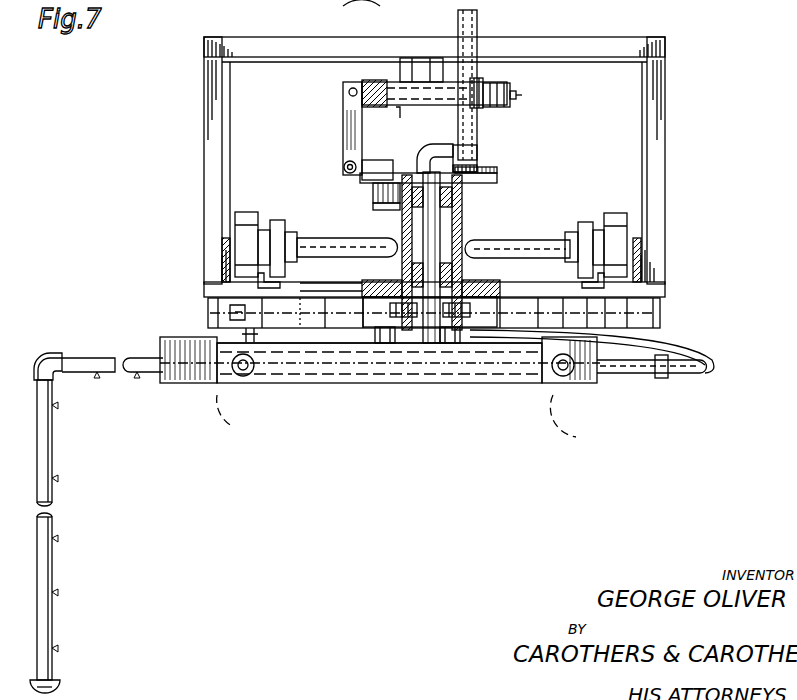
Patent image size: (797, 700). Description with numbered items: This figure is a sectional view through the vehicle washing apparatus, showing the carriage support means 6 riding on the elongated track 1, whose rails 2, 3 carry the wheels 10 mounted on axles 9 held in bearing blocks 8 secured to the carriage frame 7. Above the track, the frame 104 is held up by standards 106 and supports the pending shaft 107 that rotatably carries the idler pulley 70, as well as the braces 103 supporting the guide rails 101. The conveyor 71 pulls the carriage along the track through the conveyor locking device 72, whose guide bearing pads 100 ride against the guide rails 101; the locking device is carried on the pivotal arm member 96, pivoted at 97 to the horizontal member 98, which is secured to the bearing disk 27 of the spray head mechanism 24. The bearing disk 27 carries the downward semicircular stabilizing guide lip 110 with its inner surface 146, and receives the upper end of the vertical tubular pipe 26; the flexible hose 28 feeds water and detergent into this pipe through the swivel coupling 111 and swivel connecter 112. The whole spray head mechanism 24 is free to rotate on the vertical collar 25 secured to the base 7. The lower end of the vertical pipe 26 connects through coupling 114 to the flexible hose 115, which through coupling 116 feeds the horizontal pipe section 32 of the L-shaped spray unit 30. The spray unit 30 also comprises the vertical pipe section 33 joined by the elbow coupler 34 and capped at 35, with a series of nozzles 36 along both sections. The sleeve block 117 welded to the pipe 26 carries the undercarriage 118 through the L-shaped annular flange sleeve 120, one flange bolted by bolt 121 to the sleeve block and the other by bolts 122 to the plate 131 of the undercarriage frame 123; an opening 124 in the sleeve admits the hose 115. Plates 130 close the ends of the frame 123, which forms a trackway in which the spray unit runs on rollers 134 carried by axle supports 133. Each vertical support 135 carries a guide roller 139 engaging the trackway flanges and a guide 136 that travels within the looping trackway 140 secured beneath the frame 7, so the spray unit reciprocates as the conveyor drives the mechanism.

The elongated track 1 is at (231, 242).
The rail 2 is at (215, 283).
The rail 3 is at (641, 274).
The carriage support means 6 is at (362, 226).
The carriage support means frame 7 is at (344, 297).
The bearing blocks 8 is at (277, 224).
The axles 9 is at (305, 243).
The wheels 10 is at (245, 222).
The spray head mechanism 24 is at (533, 174).
The vertical collar 25 is at (462, 226).
The vertical tubular pipe 26 is at (425, 256).
The bearing disk 27 is at (497, 178).
The flexible hose 28 is at (460, 28).
The spray unit 30 is at (75, 358).
The horizontal pipe section 32 is at (140, 358).
The vertical pipe section 33 is at (52, 454).
The elbow coupler 34 is at (44, 356).
The cap 35 is at (56, 688).
The nozzles 36 is at (98, 410).
The idler pulley 70 is at (460, 110).
The conveyor 71 is at (522, 95).
The conveyor locking device 72 is at (342, 97).
The pivotal arm member 96 is at (345, 126).
The pivotal connection 97 is at (345, 165).
The horizontal member 98 is at (374, 160).
The guide bearing pads 100 is at (350, 90).
The guide rails 101 is at (384, 80).
The braces 103 is at (412, 119).
The frame 104 is at (548, 55).
The standards 106 is at (205, 112).
The pending shaft 107 is at (432, 70).
The stabilizing guide lip 110 is at (372, 192).
The swivel coupling 111 is at (443, 146).
The swivel connecter 112 is at (478, 158).
The coupling 114 is at (440, 330).
The flexible hose 115 is at (716, 366).
The coupling 116 is at (660, 378).
The sleeve block 117 is at (410, 286).
The undercarriage 118 is at (310, 417).
The annular flange sleeve 120 is at (400, 385).
The bolt 121 is at (392, 312).
The bolts 122 is at (376, 334).
The undercarriage frame 123 is at (330, 368).
The opening 124 is at (465, 297).
The plates 130 is at (182, 337).
The plate 131 is at (418, 360).
The axle support 133 is at (417, 419).
The rollers 134 is at (243, 377).
The vertical support 135 is at (218, 368).
The guide 136 is at (235, 312).
The guide roller 139 is at (256, 336).
The looping trackway 140 is at (660, 312).
The inner surface 146 is at (380, 207).